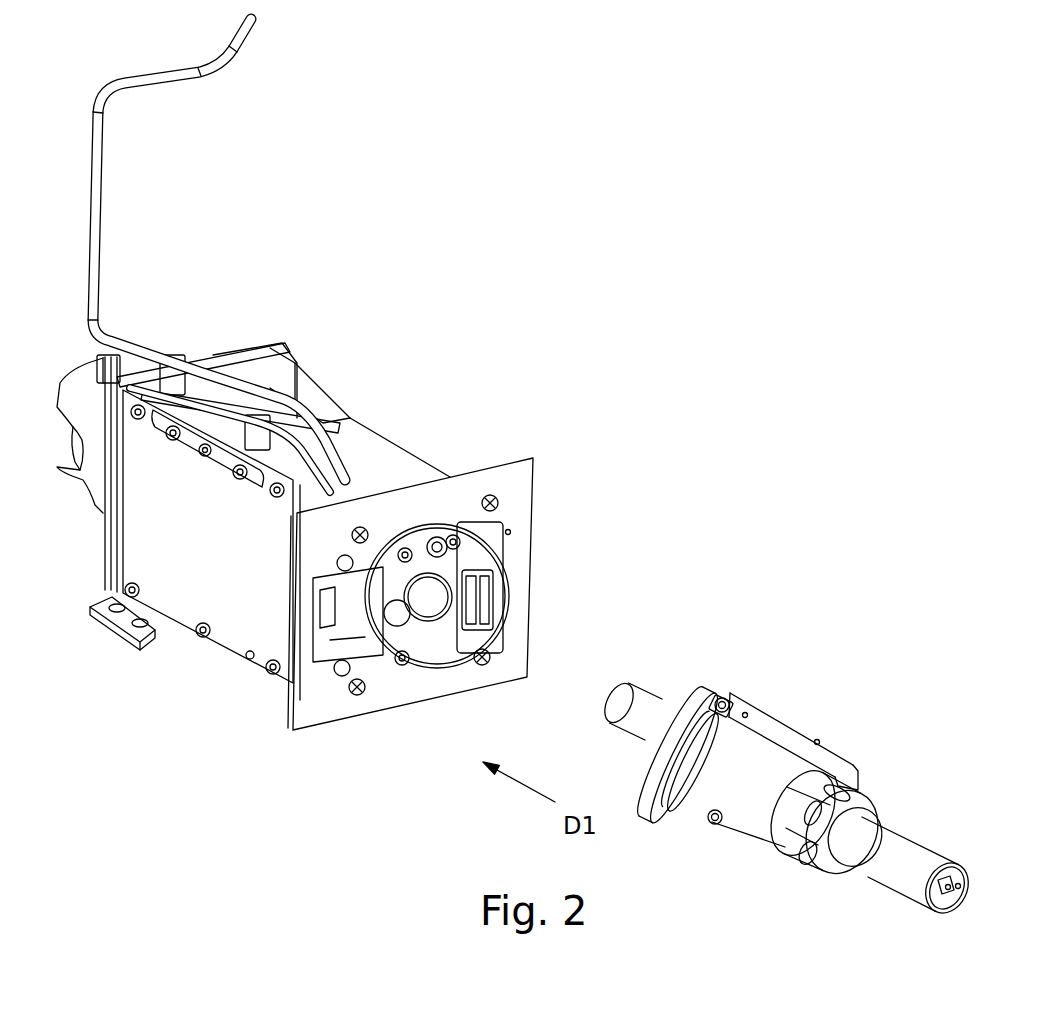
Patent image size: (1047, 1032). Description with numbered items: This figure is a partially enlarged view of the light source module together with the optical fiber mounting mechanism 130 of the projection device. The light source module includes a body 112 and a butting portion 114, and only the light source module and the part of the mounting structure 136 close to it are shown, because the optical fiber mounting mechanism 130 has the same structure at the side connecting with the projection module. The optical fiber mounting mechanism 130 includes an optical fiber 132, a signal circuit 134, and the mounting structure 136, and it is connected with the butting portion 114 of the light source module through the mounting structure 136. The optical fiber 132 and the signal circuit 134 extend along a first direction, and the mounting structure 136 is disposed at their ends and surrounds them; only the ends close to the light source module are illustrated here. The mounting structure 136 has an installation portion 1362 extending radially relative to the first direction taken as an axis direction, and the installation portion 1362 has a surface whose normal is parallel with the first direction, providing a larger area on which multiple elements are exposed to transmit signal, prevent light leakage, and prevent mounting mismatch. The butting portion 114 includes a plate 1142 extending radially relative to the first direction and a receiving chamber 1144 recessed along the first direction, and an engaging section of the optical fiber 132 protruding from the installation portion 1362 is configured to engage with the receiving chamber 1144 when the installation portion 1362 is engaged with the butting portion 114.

The body 112 is at (364, 445).
The butting portion 114 is at (493, 594).
The plate 1142 is at (511, 532).
The receiving chamber 1144 is at (444, 585).
The optical fiber mounting mechanism 130 is at (249, 312).
The optical fiber 132 is at (948, 887).
The signal circuit 134 is at (958, 886).
The mounting structure 136 is at (772, 755).
The installation portion 1362 is at (720, 690).